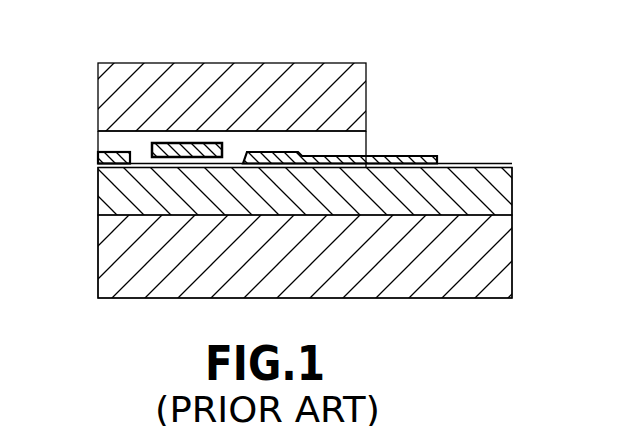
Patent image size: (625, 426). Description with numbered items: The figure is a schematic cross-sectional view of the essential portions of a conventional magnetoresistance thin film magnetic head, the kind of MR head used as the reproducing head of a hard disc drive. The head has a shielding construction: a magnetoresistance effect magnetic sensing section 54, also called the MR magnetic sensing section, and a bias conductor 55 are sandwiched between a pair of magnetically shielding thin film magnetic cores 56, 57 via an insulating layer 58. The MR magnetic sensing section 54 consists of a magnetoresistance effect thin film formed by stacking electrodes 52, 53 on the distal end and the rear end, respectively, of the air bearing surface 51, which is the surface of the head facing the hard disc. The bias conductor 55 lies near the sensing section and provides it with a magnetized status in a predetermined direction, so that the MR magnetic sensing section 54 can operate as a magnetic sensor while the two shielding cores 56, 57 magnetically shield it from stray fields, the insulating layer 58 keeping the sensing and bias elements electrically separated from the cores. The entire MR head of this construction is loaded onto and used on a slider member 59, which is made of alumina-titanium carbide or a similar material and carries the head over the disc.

The air bearing surface 51 is at (112, 185).
The electrode 52 is at (98, 155).
The electrode 53 is at (438, 155).
The magnetoresistance effect magnetic sensing section 54 is at (233, 163).
The bias conductor 55 is at (183, 145).
The magnetically shielding thin film magnetic core 56 is at (497, 200).
The magnetically shielding thin film magnetic core 57 is at (358, 88).
The insulating layer 58 is at (357, 145).
The slider member 59 is at (497, 267).